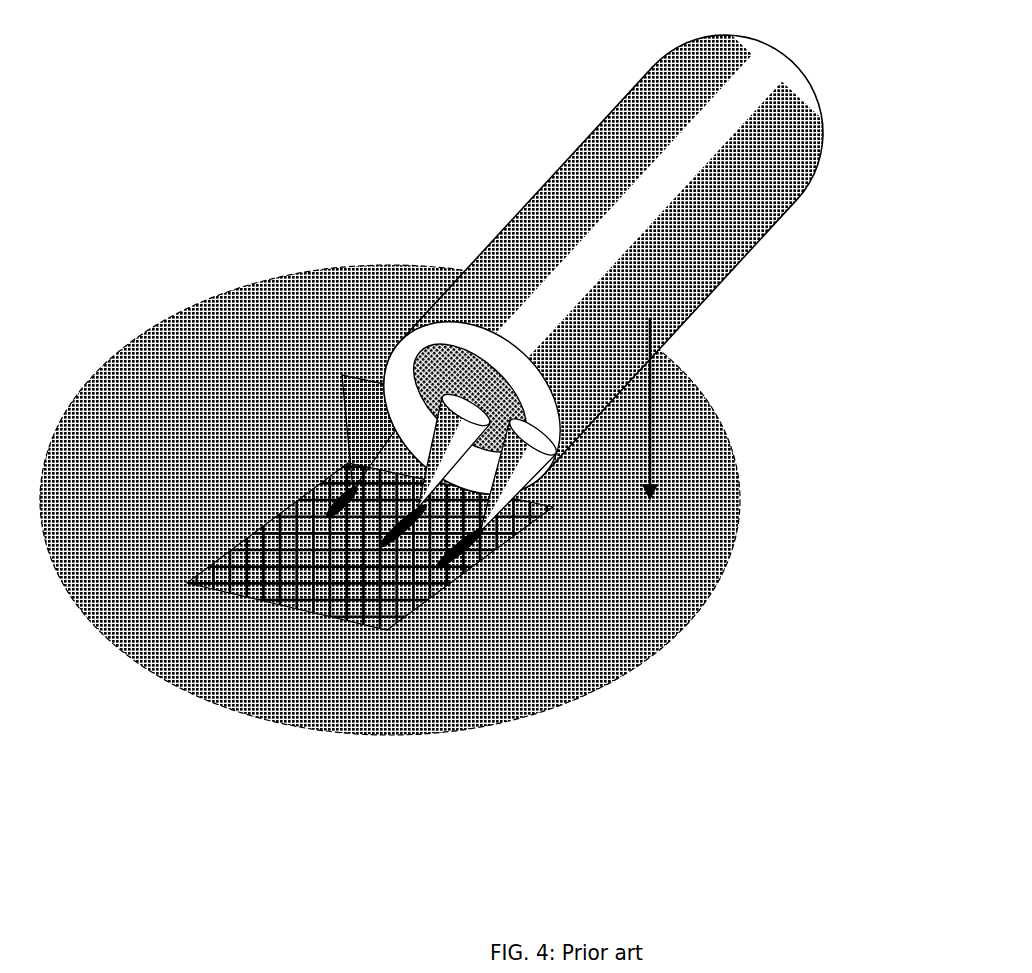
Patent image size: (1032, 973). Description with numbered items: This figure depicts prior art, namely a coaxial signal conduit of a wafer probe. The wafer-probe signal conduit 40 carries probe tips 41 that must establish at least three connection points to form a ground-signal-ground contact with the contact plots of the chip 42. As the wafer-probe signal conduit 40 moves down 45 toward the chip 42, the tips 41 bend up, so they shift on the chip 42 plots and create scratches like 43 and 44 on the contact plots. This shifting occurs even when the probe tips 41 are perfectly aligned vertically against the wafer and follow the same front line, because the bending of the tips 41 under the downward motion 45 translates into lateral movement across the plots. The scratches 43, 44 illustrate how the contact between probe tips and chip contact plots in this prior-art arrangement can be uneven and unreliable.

The wafer-probe signal conduit 40 is at (747, 250).
The tips 41 is at (553, 490).
The chip 42 is at (295, 572).
The scratch 43 is at (323, 480).
The scratch 44 is at (462, 550).
The downward movement 45 is at (662, 405).